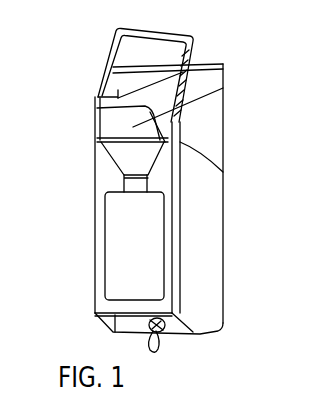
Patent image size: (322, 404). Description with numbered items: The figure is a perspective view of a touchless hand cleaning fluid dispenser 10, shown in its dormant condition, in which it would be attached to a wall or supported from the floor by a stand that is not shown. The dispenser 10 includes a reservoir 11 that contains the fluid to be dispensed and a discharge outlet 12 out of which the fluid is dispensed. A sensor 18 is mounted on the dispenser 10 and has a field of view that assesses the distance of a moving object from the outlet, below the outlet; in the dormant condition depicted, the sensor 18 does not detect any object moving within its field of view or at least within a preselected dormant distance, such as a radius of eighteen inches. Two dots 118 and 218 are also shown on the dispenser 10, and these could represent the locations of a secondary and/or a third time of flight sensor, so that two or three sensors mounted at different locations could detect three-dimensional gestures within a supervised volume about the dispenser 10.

The touchless hand cleaning fluid dispenser 10 is at (246, 56).
The reservoir 11 is at (118, 237).
The discharge outlet 12 is at (223, 88).
The sensor 18 is at (107, 121).
The dot 118 is at (107, 135).
The dot 218 is at (223, 172).